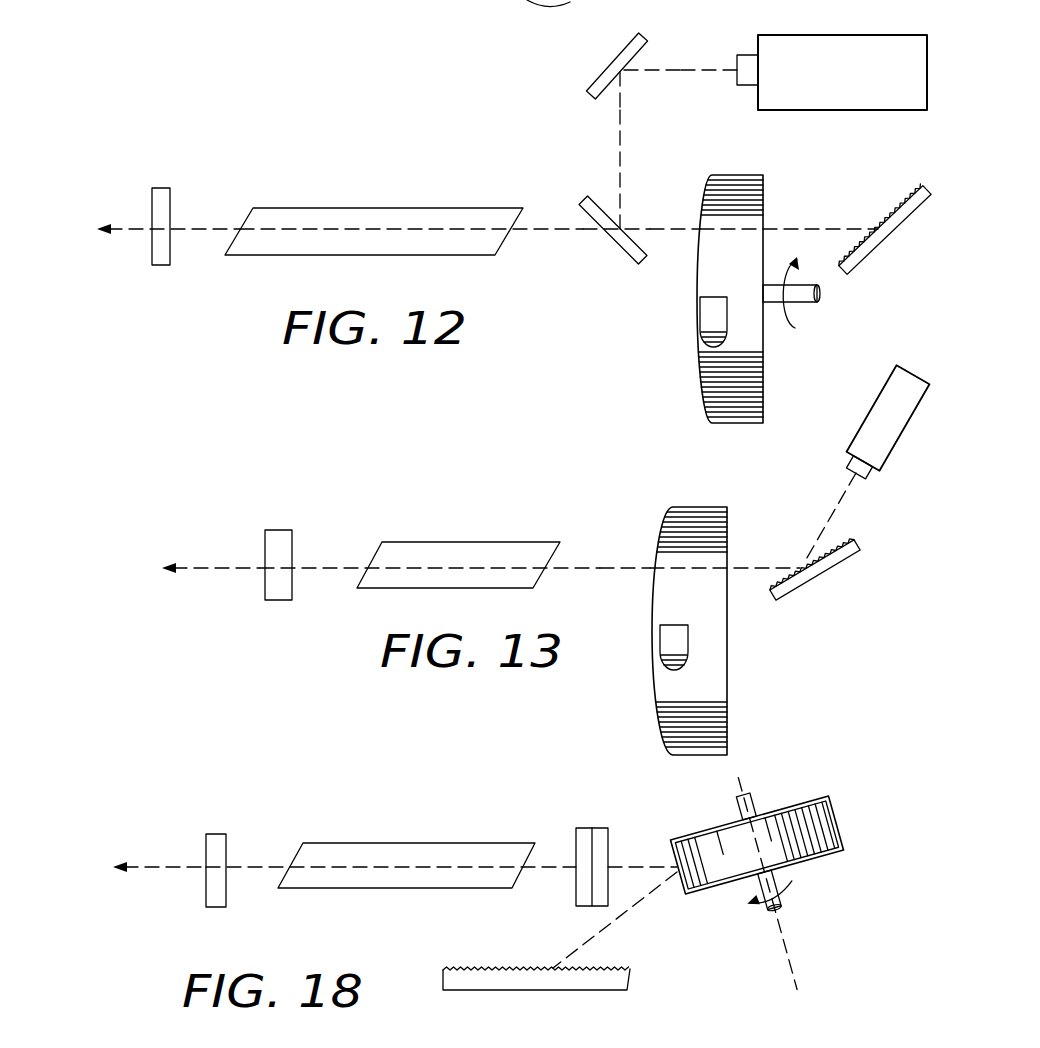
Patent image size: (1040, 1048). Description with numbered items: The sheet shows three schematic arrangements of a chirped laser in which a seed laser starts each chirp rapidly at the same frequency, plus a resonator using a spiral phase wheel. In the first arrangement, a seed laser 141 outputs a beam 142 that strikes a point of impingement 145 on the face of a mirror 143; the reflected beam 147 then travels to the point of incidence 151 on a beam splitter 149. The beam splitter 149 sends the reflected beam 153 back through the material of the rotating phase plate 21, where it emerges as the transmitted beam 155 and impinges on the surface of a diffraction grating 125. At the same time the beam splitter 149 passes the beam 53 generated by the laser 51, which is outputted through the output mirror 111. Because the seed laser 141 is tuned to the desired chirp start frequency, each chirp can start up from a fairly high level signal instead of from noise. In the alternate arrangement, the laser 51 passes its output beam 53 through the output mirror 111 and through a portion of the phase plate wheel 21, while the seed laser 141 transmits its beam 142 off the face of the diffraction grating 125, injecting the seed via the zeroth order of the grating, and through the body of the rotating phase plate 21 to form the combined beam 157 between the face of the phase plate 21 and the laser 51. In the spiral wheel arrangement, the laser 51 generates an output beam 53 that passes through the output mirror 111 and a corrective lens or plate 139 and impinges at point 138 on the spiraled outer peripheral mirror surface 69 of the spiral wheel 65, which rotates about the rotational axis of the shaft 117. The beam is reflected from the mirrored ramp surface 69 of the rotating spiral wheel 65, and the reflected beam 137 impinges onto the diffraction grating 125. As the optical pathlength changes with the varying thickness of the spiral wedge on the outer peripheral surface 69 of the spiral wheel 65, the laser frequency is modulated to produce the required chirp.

In FIG. 12, the rotating phase plate 21 is at (770, 203).
In FIG. 13, the rotating phase plate 21 is at (735, 507).
In FIG. 12, the laser 51 is at (380, 193).
In FIG. 13, the laser 51 is at (500, 530).
In FIG. 18, the laser 51 is at (378, 828).
In FIG. 12, the output beam 53 is at (132, 229).
In FIG. 13, the output beam 53 is at (210, 568).
In FIG. 18, the output beam 53 is at (168, 867).
In FIG. 18, the spiral wheel 65 is at (780, 873).
In FIG. 18, the spiraled outer peripheral mirror surface 69 is at (840, 838).
In FIG. 12, the output mirror 111 is at (170, 200).
In FIG. 13, the output mirror 111 is at (316, 510).
In FIG. 18, the output mirror 111 is at (226, 835).
In FIG. 12, the shaft 117 is at (812, 303).
In FIG. 18, the shaft 117 is at (783, 905).
In FIG. 12, the diffraction grating 125 is at (896, 247).
In FIG. 13, the diffraction grating 125 is at (822, 596).
In FIG. 18, the diffraction grating 125 is at (480, 997).
In FIG. 18, the reflected beam 137 is at (626, 907).
In FIG. 18, the point of impingement 138 is at (677, 868).
In FIG. 18, the corrective lens or plate 139 is at (587, 806).
In FIG. 12, the seed laser 141 is at (810, 30).
In FIG. 13, the seed laser 141 is at (905, 450).
In FIG. 12, the seed beam 142 is at (707, 42).
In FIG. 13, the seed beam 142 is at (822, 533).
In FIG. 12, the mirror 143 is at (590, 78).
In FIG. 12, the point of impingement 145 is at (624, 72).
In FIG. 12, the reflected beam 147 is at (620, 143).
In FIG. 12, the beam splitter 149 is at (618, 250).
In FIG. 12, the point of incidence 151 is at (622, 228).
In FIG. 12, the reflected beam 153 is at (687, 230).
In FIG. 12, the transmitted beam 155 is at (826, 228).
In FIG. 13, the combined beam 157 is at (612, 569).